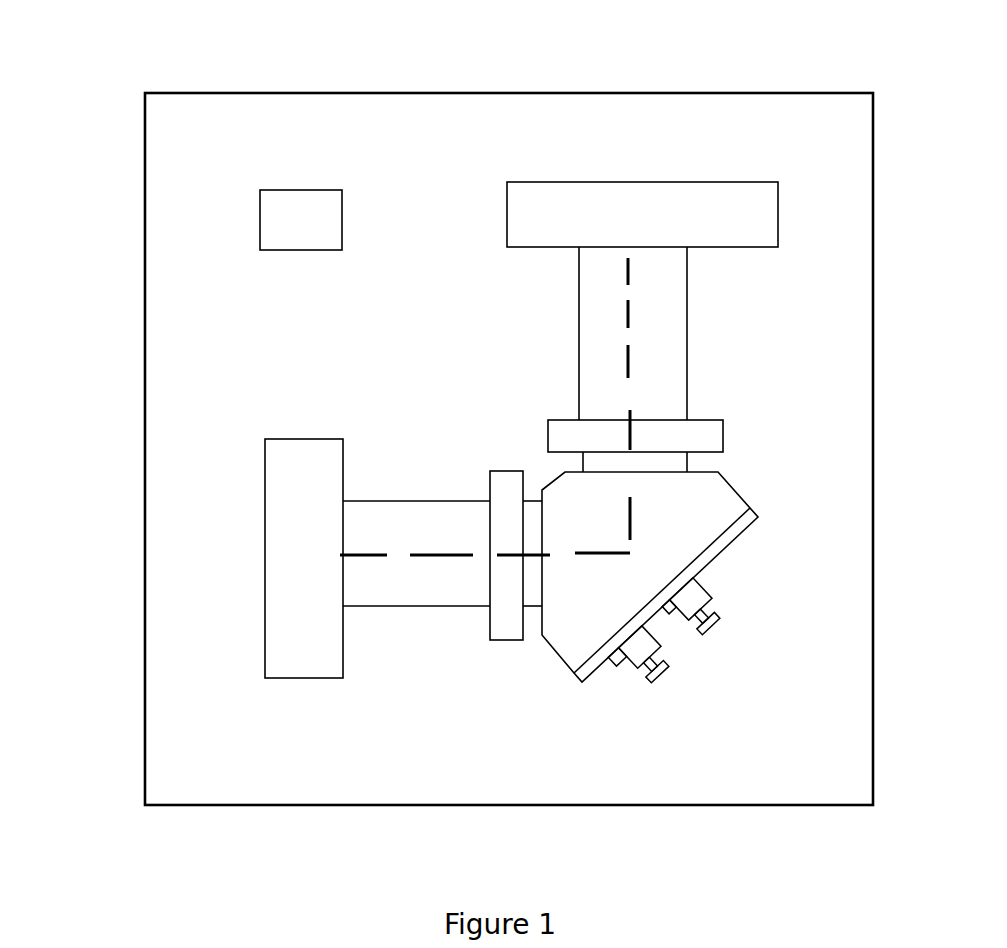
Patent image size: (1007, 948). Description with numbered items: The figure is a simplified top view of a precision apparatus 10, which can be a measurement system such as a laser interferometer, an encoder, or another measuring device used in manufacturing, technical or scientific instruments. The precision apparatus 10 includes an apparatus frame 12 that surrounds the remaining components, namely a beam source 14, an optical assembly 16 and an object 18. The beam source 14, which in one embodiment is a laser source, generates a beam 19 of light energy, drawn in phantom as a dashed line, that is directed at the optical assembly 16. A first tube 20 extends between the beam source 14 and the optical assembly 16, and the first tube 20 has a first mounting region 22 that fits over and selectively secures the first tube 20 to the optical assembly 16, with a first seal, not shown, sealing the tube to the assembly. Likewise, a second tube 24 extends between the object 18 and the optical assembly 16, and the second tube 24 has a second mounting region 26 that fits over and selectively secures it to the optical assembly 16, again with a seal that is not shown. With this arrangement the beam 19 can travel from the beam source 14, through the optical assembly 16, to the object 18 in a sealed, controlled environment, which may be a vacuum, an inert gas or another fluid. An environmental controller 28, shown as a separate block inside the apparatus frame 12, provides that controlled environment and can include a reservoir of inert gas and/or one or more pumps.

The precision apparatus 10 is at (539, 70).
The apparatus frame 12 is at (348, 122).
The beam source 14 is at (292, 609).
The optical assembly 16 is at (712, 500).
The object 18 is at (667, 200).
The beam 19 is at (363, 553).
The first tube 20 is at (403, 588).
The first mounting region 22 is at (507, 632).
The second tube 24 is at (665, 307).
The second mounting region 26 is at (710, 432).
The environmental controller 28 is at (282, 215).